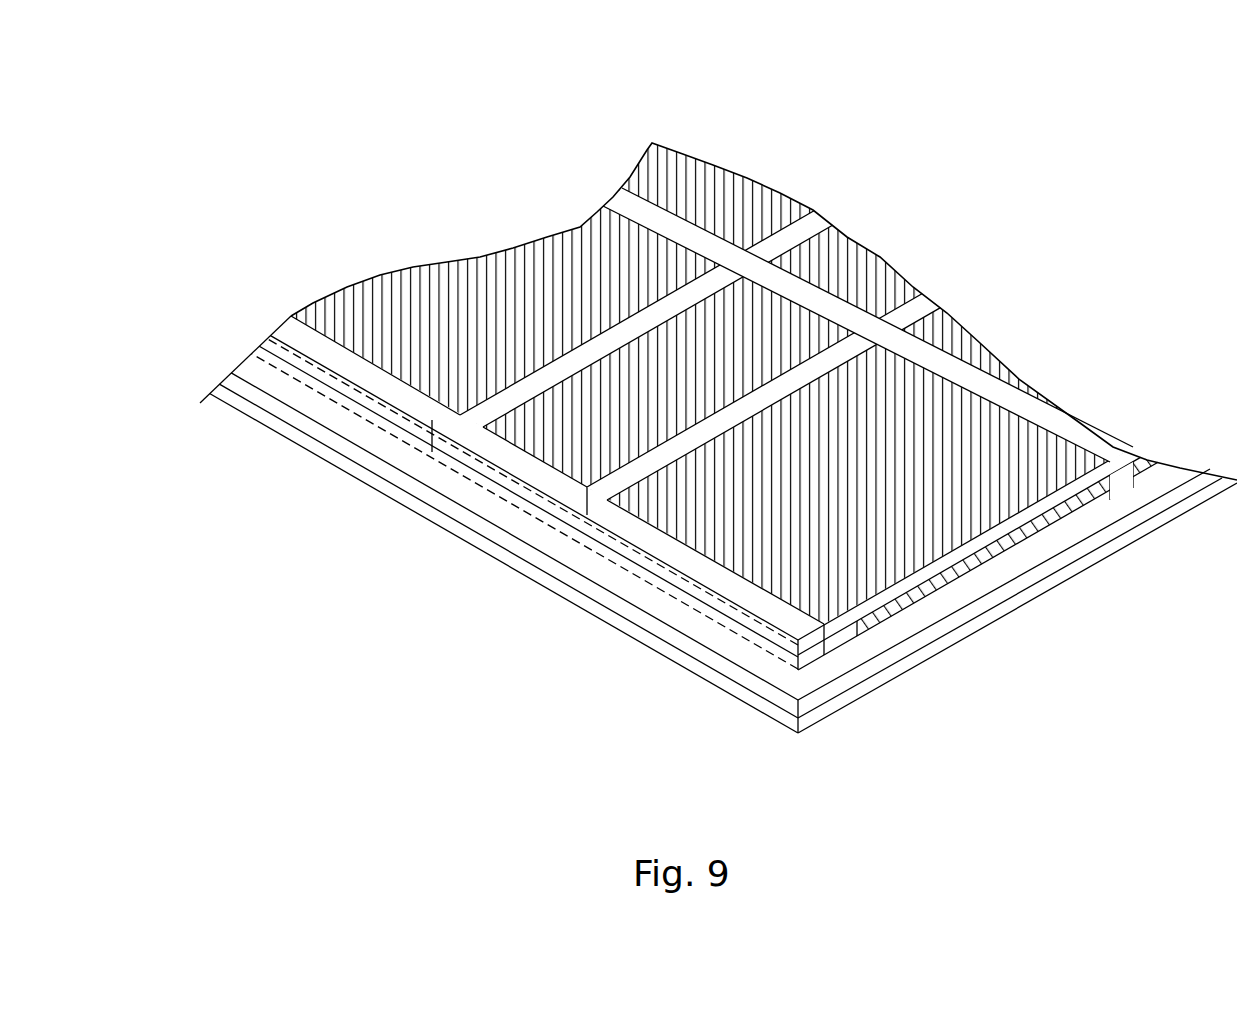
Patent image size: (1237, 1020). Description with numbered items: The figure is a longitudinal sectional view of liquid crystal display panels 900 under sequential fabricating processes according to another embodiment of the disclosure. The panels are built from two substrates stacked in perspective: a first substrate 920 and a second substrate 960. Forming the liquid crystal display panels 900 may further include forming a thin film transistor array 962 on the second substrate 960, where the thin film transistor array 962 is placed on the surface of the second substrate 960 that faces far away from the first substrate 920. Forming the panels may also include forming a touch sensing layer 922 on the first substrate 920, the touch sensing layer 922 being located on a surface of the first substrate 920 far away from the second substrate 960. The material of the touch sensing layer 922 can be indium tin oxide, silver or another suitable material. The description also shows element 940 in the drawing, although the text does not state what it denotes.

The liquid crystal display panels 900 is at (1134, 85).
The first substrate 920 is at (710, 637).
The touch sensing layer 922 is at (740, 693).
The textured layer 940 is at (288, 323).
The second substrate 960 is at (822, 655).
The thin film transistor array 962 is at (843, 633).